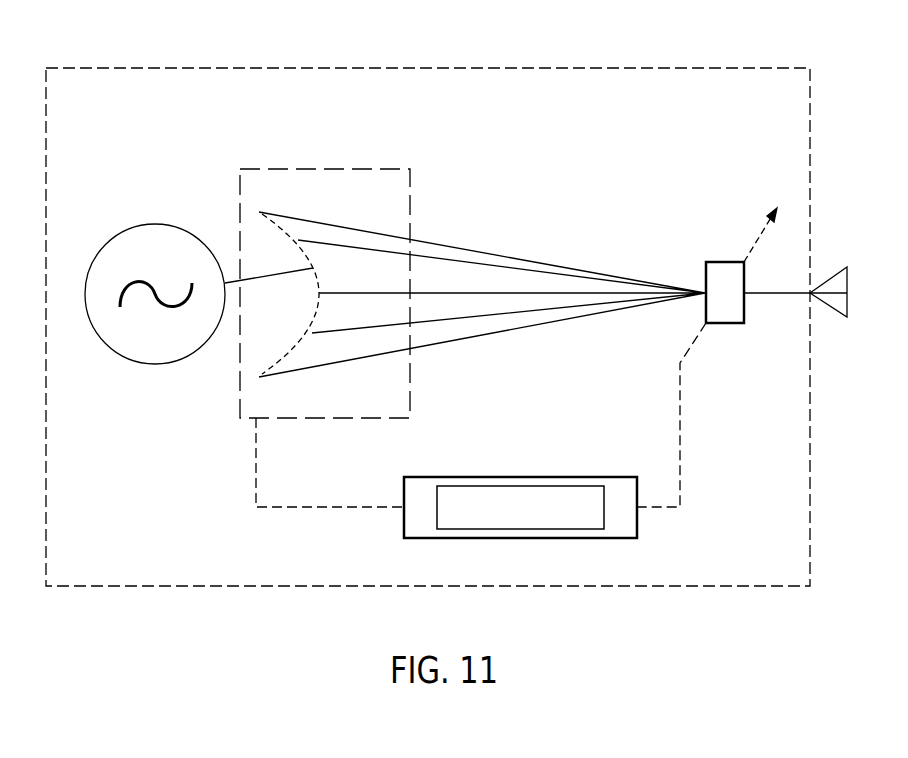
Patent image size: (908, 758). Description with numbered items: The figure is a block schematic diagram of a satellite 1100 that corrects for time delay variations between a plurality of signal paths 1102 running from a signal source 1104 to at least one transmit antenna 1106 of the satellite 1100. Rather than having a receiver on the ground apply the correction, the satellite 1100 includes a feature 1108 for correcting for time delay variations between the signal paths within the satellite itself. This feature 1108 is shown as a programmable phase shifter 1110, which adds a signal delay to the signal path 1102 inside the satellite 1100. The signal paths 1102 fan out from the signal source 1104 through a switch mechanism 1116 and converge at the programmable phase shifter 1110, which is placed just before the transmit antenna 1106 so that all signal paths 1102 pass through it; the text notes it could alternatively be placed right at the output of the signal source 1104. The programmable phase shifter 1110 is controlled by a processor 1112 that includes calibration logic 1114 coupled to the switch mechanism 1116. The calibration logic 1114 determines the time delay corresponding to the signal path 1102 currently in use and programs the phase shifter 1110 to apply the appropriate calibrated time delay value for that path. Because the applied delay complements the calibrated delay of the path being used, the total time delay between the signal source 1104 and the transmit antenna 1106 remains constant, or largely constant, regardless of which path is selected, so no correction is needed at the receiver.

The satellite 1100 is at (525, 68).
The signal paths 1102 is at (508, 237).
The signal source 1104 is at (150, 224).
The transmit antenna 1106 is at (838, 265).
The feature for correcting for time delay variations 1108 is at (716, 232).
The programmable phase shifter 1110 is at (727, 325).
The processor 1112 is at (476, 477).
The calibration logic 1114 is at (560, 486).
The switch mechanism 1116 is at (382, 169).